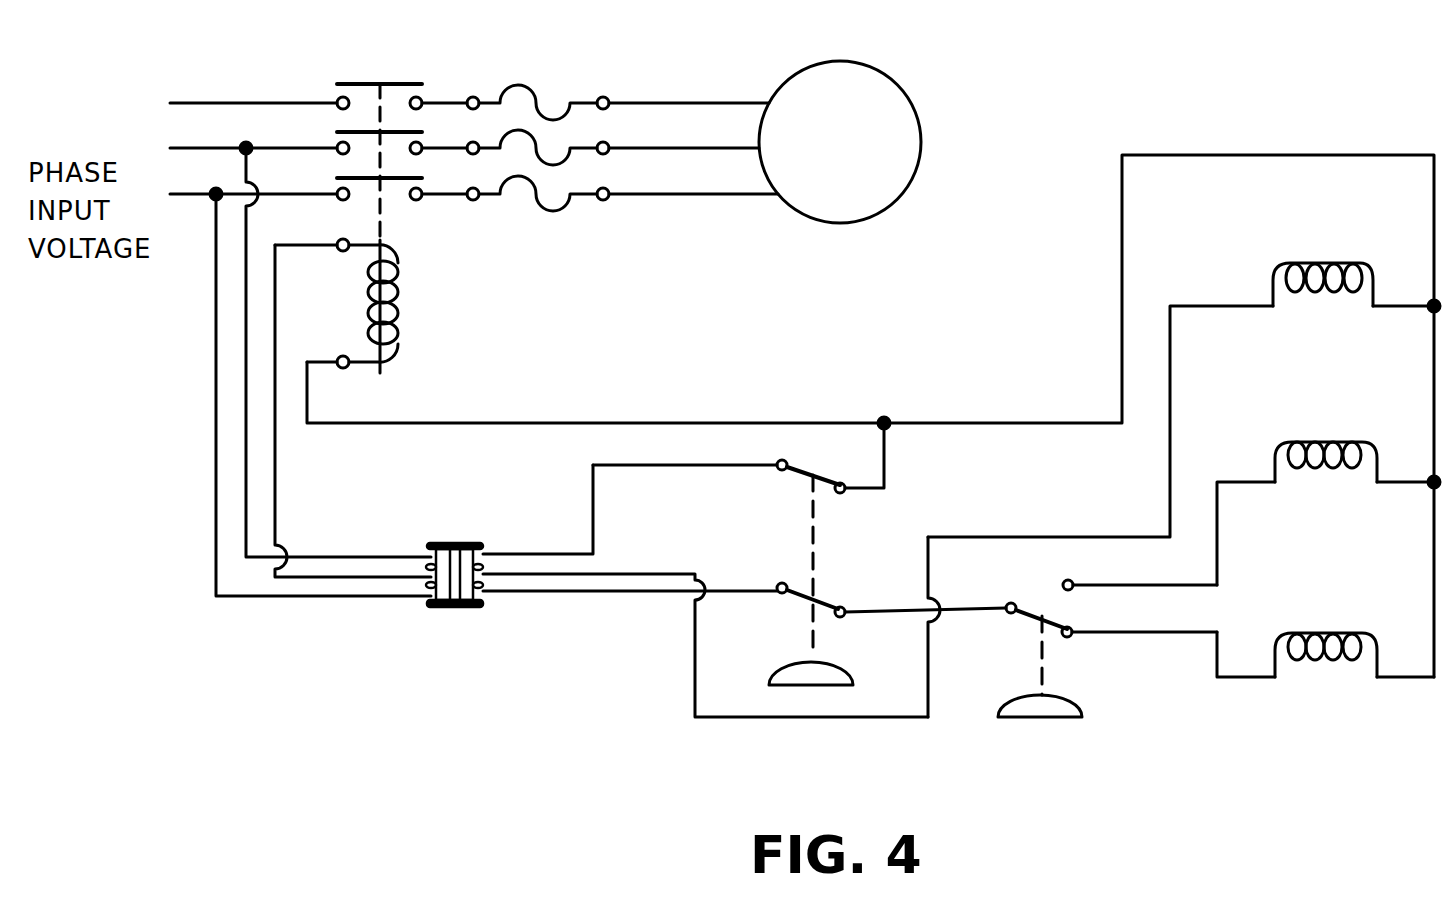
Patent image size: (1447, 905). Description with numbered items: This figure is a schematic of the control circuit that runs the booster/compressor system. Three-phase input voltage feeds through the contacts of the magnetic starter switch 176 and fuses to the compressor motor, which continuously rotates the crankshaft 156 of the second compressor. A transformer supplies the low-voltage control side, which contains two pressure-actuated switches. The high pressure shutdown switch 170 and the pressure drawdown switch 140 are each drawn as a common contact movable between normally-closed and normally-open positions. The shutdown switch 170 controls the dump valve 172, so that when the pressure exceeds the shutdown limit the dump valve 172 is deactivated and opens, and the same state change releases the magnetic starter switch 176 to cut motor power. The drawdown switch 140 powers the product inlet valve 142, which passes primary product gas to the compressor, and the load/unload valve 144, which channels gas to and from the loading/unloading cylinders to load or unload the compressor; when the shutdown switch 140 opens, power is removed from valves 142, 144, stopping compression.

The crankshaft 156 is at (812, 209).
The magnetic starter switch 176 is at (403, 263).
The high pressure shutdown switch 170 is at (792, 690).
The pressure drawdown switch 140 is at (1074, 692).
The dump valve 172 is at (1282, 275).
The product inlet valve 142 is at (1335, 467).
The load/unload valve 144 is at (1355, 660).